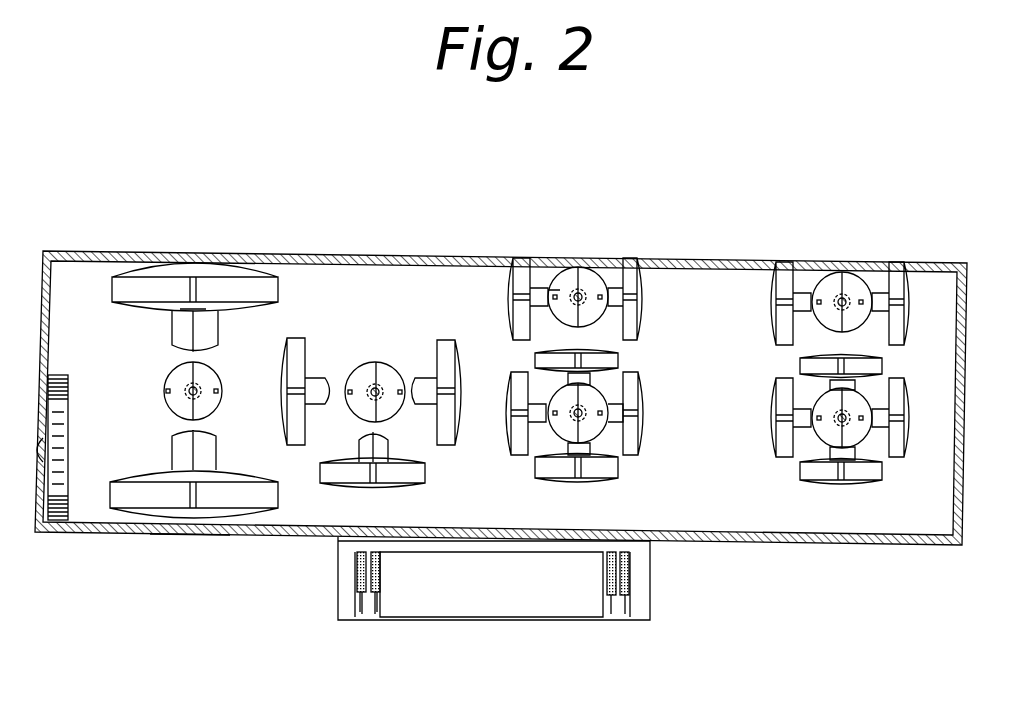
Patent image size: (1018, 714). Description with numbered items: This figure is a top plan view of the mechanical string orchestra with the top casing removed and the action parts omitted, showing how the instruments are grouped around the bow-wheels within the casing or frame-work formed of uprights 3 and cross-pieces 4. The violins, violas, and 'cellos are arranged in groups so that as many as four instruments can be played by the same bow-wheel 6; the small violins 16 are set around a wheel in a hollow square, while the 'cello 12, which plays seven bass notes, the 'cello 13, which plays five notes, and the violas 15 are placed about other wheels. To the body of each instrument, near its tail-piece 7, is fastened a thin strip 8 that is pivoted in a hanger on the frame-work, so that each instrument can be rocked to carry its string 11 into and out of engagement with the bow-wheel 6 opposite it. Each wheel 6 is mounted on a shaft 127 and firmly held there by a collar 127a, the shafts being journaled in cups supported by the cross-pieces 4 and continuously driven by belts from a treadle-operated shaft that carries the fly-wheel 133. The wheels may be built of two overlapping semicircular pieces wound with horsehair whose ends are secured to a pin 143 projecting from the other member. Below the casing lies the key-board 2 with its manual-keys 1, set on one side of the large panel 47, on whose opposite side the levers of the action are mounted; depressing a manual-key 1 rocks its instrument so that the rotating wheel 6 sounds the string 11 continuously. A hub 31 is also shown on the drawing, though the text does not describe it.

The manual-key 1 is at (378, 603).
The key-board 2 is at (345, 604).
The upright 3 is at (964, 438).
The cross-piece 4 is at (190, 532).
The bow-wheel 6 is at (215, 403).
The tail-piece 7 is at (180, 309).
The thin strip 8 is at (196, 290).
The string 11 is at (198, 332).
The 'cello 12 is at (194, 494).
The 'cello 13 is at (195, 287).
The viola 15 is at (450, 352).
The violin 16 is at (632, 390).
The hub 31 is at (216, 451).
The panel 47 is at (337, 538).
The shaft 127 is at (186, 397).
The collar 127a is at (186, 390).
The fly-wheel 133 is at (68, 410).
The pin 143 is at (219, 391).